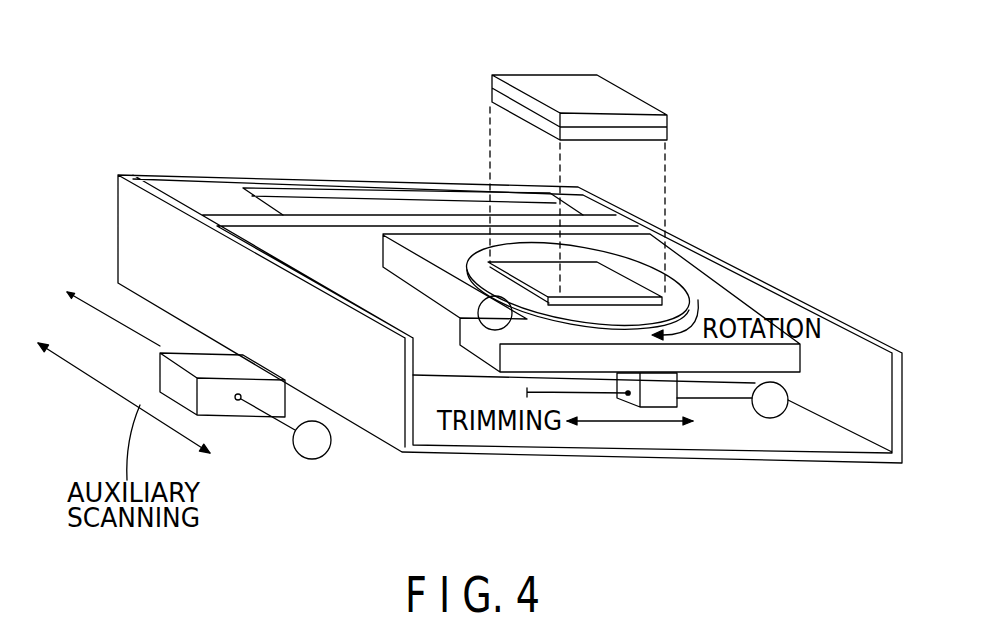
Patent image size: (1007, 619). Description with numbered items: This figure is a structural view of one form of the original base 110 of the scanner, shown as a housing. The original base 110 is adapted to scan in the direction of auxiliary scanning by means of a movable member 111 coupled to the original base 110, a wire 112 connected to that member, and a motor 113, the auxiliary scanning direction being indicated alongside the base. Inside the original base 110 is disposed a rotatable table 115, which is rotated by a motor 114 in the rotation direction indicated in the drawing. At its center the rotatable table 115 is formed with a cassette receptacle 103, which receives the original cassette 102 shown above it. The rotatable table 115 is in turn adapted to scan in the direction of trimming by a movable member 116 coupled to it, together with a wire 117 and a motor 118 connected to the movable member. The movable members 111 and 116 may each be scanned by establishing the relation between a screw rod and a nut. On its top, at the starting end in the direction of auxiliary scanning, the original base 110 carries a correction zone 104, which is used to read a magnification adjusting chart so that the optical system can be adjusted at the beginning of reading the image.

The original cassette 102 is at (670, 80).
The cassette receptacle 103 is at (643, 277).
The correction zone 104 is at (347, 202).
The original base 110 is at (765, 266).
The movable member 111 is at (248, 418).
The wire 112 is at (120, 325).
The motor 113 is at (326, 454).
The motor 114 is at (478, 313).
The rotatable table 115 is at (687, 283).
The movable member 116 is at (657, 407).
The wire 117 is at (717, 398).
The motor 118 is at (782, 414).